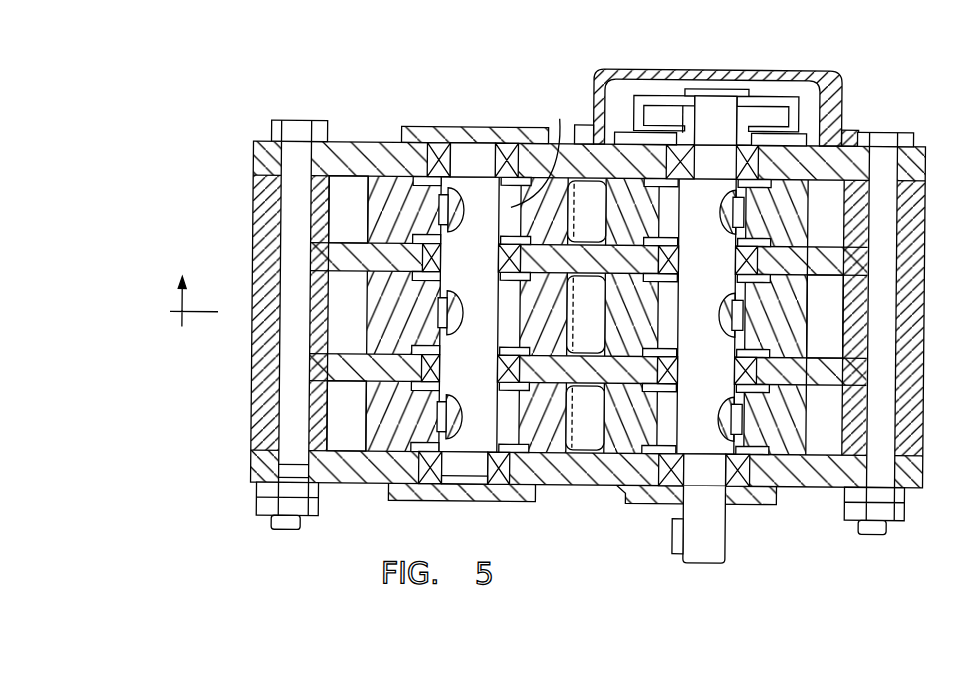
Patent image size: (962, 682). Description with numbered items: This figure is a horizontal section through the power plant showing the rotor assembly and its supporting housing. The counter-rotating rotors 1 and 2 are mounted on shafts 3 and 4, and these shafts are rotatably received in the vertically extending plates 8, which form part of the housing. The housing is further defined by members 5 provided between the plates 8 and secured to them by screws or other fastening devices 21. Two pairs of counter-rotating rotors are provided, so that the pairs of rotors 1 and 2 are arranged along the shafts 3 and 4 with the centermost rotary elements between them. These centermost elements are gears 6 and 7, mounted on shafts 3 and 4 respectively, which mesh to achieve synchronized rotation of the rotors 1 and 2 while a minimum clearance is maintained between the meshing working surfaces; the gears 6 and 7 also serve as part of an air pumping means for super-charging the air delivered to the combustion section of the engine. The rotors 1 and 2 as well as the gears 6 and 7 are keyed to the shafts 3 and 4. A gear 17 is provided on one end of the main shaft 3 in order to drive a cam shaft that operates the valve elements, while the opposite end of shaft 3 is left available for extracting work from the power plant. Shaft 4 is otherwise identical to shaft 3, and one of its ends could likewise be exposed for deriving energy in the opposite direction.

The rotor 1 is at (809, 207).
The rotor 2 is at (365, 215).
The shaft 3 is at (727, 530).
The shaft 4 is at (361, 216).
The housing member 5 is at (255, 224).
The gear 6 is at (806, 305).
The gear 7 is at (365, 325).
The plate 8 is at (362, 144).
The gear 17 is at (763, 95).
The fastening device 21 is at (282, 533).